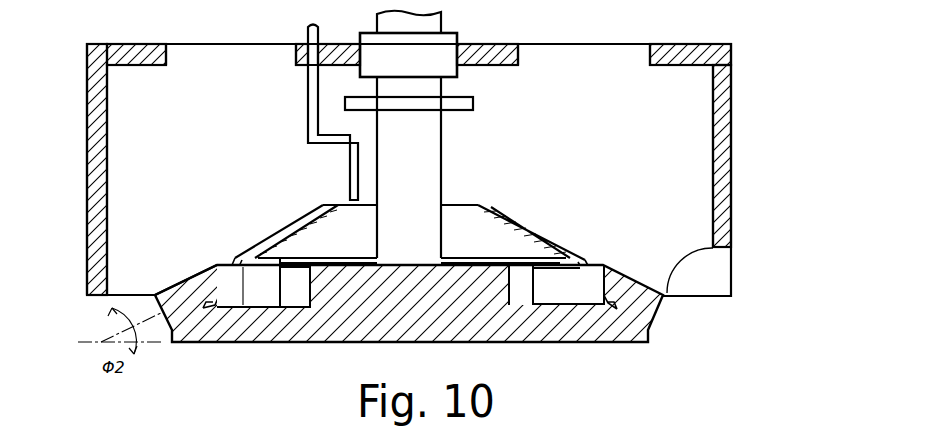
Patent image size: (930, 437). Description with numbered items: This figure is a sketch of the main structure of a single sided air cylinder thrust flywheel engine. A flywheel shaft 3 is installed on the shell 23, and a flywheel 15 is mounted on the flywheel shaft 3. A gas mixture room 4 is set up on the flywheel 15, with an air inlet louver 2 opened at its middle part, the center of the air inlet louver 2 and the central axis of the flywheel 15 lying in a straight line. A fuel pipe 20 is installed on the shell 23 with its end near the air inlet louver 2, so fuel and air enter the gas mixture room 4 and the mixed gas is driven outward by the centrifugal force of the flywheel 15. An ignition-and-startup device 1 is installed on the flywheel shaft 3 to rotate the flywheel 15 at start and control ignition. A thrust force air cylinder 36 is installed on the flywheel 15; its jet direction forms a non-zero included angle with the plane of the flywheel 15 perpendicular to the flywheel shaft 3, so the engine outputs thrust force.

The ignition-and-startup device 1 is at (423, 103).
The air inlet louver 2 is at (475, 205).
The flywheel shaft 3 is at (416, 146).
The gas mixture room 4 is at (470, 228).
The flywheel 15 is at (607, 330).
The fuel pipe 20 is at (313, 100).
The shell 23 is at (710, 273).
The thrust force air cylinder 36 is at (173, 307).